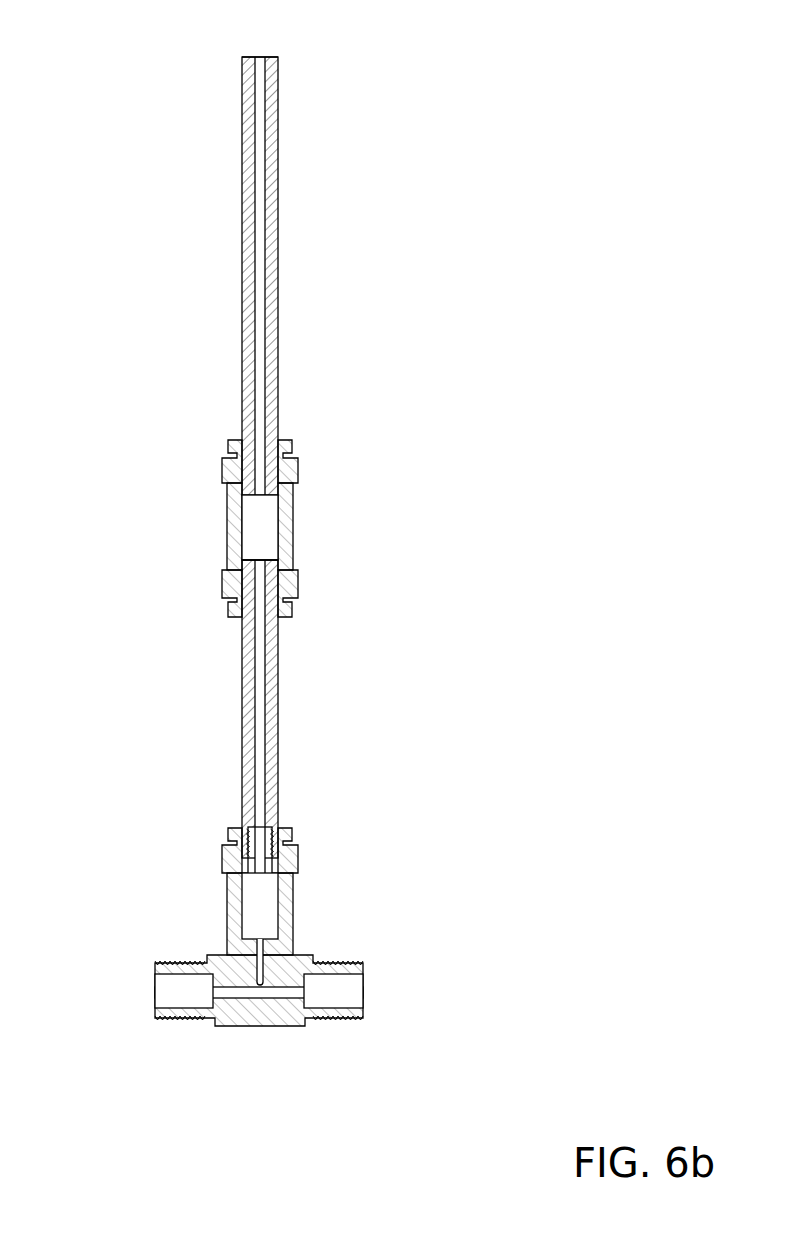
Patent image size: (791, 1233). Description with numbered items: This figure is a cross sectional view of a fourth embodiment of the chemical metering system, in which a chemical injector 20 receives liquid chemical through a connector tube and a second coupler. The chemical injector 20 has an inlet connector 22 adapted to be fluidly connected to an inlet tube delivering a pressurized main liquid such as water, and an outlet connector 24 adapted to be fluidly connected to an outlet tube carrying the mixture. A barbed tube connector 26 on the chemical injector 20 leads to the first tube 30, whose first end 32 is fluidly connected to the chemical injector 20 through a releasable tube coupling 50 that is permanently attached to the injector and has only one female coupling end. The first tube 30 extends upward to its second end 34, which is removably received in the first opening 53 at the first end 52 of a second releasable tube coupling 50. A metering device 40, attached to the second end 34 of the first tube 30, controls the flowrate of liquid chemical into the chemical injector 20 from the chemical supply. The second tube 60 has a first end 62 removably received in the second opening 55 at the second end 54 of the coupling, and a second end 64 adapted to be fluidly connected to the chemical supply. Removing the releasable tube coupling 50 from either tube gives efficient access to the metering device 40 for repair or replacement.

The chemical injector 20 is at (252, 1033).
The inlet connector 22 is at (155, 991).
The outlet connector 24 is at (365, 988).
The barbed tube connector 26 is at (260, 968).
The first tube 30 is at (278, 725).
The first end of first tube 32 is at (272, 850).
The second end of first tube 34 is at (261, 560).
The metering device 40 is at (257, 875).
The releasable tube coupling 50 is at (300, 523).
The first end of releasable tube coupling 52 is at (233, 617).
The first opening 53 is at (288, 617).
The second end of releasable tube coupling 54 is at (284, 440).
The second opening 55 is at (242, 440).
The second tube 60 is at (278, 308).
The first end of second tube 62 is at (258, 498).
The second end of second tube 64 is at (258, 57).